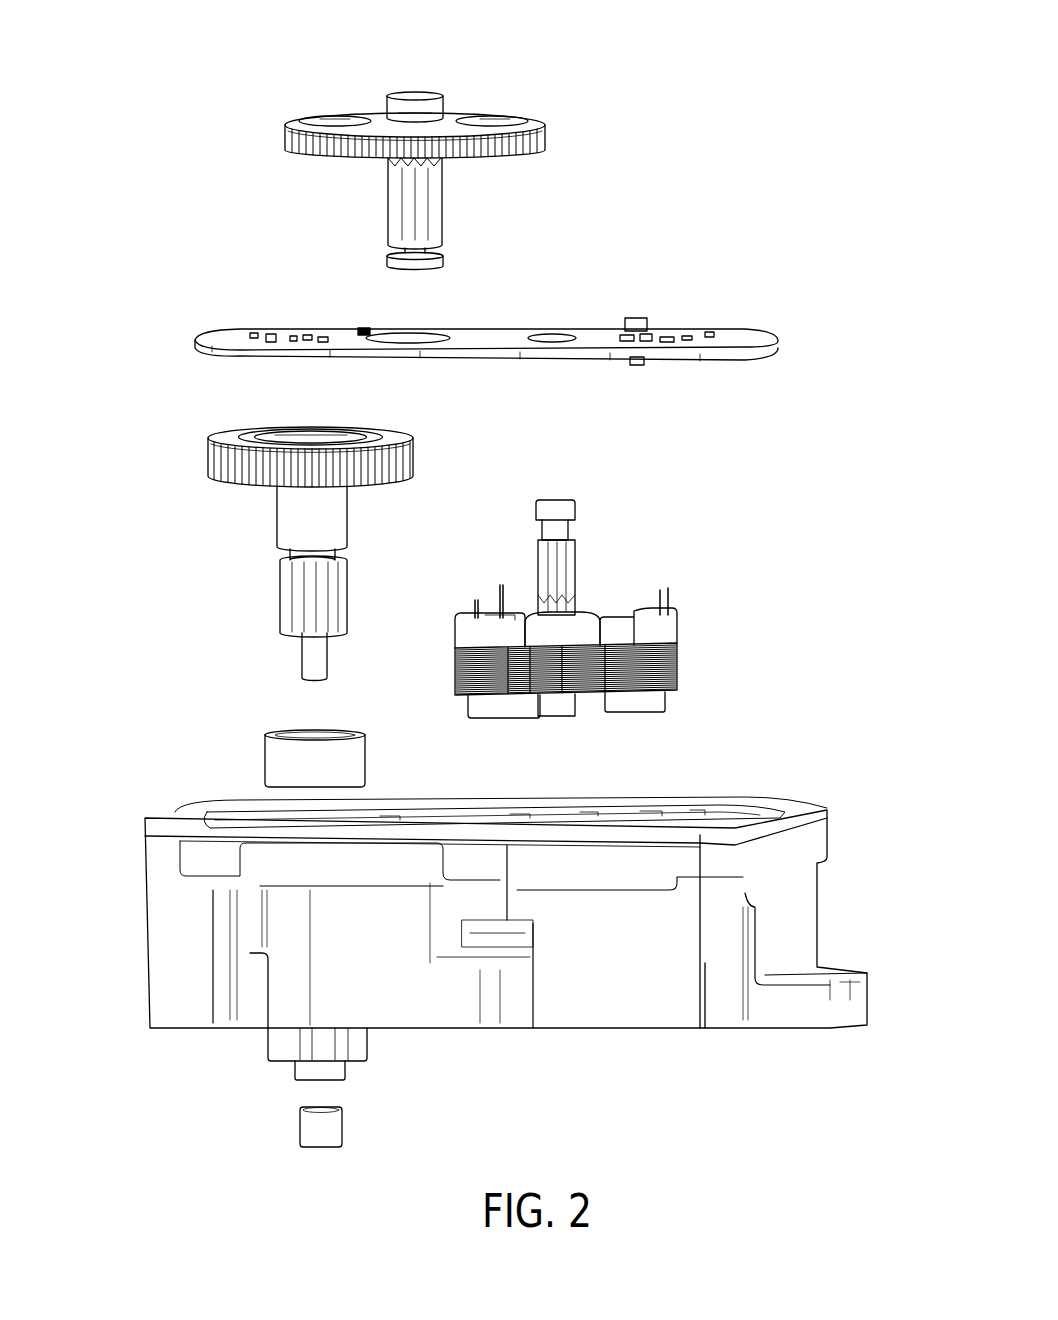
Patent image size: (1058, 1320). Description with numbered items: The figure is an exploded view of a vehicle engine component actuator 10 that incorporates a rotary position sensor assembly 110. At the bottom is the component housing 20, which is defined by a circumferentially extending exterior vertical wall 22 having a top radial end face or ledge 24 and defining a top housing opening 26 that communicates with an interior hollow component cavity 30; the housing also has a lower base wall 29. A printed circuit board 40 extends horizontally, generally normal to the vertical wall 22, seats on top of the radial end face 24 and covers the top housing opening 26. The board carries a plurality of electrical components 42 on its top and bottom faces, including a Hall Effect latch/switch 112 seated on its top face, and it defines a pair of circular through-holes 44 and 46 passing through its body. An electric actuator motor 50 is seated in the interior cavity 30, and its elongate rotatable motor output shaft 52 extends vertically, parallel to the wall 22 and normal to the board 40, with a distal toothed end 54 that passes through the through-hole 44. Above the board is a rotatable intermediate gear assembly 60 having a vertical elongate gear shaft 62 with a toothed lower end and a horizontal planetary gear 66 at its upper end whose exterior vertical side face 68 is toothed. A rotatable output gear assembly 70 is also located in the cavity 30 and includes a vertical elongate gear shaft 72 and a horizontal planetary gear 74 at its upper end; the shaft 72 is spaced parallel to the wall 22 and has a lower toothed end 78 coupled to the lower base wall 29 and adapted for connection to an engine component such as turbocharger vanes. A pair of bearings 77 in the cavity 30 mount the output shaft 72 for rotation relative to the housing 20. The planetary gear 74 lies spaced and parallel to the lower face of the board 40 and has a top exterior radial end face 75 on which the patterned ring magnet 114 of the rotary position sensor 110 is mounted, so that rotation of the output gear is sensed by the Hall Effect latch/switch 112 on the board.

The vehicle engine component actuator 10 is at (812, 464).
The component housing 20 is at (511, 899).
The exterior vertical wall 22 is at (647, 975).
The radial end face 24 is at (790, 808).
The top housing opening 26 is at (738, 810).
The lower base wall 29 is at (428, 1030).
The interior hollow component cavity 30 is at (540, 810).
The printed circuit board 40 is at (506, 296).
The electrical components 42 is at (266, 333).
The circular through-hole 44 is at (556, 335).
The circular through-hole 46 is at (425, 337).
The electric actuator motor 50 is at (604, 597).
The motor output shaft 52 is at (562, 527).
The distal toothed end 54 is at (560, 560).
The intermediate gear assembly 60 is at (491, 138).
The gear shaft 62 is at (448, 197).
The planetary gear 66 is at (533, 117).
The toothed vertical side face 68 is at (548, 135).
The output gear assembly 70 is at (274, 485).
The gear shaft 72 is at (280, 520).
The planetary gear 74 is at (232, 464).
The top exterior radial end face 75 is at (400, 430).
The bearings 77 is at (283, 760).
The lower toothed end 78 is at (340, 600).
The rotary position sensor assembly 110 is at (368, 372).
The Hall Effect latch/switch 112 is at (367, 327).
The patterned ring magnet 114 is at (250, 432).